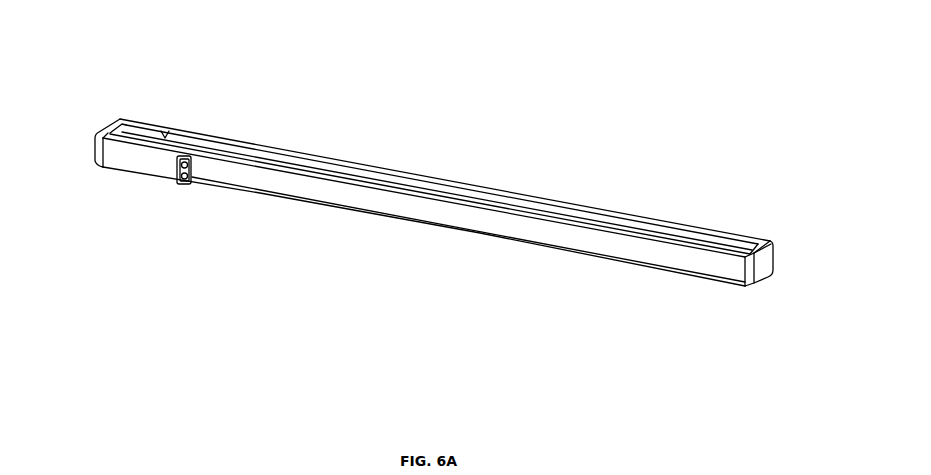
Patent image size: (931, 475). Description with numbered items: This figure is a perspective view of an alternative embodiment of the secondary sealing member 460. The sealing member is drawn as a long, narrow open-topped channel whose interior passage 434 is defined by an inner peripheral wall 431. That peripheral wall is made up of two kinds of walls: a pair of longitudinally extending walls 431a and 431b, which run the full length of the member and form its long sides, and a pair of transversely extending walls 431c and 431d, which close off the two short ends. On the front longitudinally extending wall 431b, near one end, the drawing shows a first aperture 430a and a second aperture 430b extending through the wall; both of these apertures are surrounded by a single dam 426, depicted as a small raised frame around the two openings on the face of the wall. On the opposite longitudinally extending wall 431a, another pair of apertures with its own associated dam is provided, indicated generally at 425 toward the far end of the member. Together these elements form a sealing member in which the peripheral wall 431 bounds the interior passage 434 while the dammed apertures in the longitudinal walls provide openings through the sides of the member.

The secondary sealing member 460 is at (576, 143).
The inner peripheral wall 431 is at (663, 282).
The longitudinally extending wall 431a is at (418, 178).
The longitudinally extending wall 431b is at (478, 226).
The transversely extending wall 431c is at (770, 262).
The transversely extending wall 431d is at (100, 131).
The pair of apertures and associated dam 425 is at (688, 220).
The interior passage 434 is at (165, 136).
The dam 426 is at (191, 170).
The first aperture 430a is at (177, 173).
The second aperture 430b is at (187, 184).